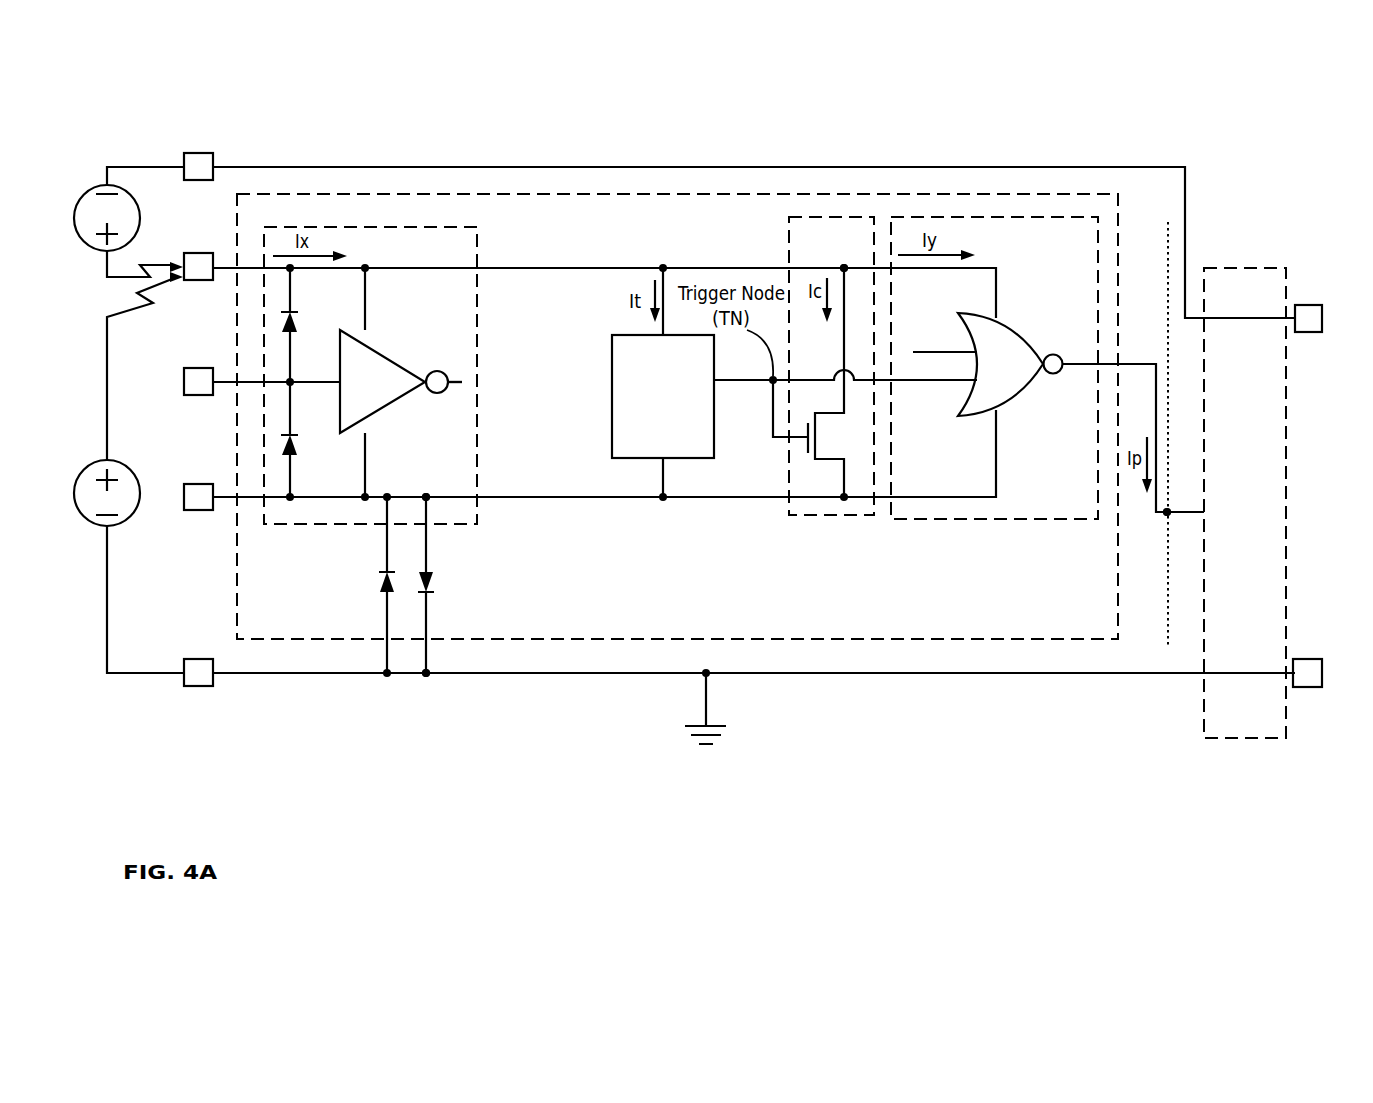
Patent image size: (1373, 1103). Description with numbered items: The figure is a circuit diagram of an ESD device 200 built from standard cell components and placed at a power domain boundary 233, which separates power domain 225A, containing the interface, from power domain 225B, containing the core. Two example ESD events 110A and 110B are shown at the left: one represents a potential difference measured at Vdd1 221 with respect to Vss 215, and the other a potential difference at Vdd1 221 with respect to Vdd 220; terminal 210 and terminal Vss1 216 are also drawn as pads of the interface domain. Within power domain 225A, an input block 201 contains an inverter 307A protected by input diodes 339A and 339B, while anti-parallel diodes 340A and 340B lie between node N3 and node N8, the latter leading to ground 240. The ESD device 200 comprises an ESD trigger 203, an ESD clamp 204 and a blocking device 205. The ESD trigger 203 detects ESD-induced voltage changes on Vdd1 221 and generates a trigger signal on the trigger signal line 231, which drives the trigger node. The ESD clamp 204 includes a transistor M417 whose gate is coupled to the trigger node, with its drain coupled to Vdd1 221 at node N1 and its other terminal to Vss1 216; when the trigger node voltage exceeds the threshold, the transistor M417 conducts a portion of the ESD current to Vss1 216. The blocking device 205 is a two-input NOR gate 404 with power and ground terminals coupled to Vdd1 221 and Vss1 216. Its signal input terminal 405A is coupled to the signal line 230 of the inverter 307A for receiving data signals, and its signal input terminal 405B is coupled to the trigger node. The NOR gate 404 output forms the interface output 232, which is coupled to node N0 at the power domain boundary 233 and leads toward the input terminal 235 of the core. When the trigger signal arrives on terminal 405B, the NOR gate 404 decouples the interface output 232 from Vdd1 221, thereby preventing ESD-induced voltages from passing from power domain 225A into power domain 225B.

The ESD event 110A is at (128, 440).
The ESD event 110B is at (122, 192).
The ESD device 200 is at (883, 568).
The input block 201 is at (310, 227).
The ESD trigger 203 is at (663, 396).
The ESD clamp 204 is at (808, 217).
The blocking device 205 is at (928, 217).
The input pad 210 is at (192, 383).
The Vss 215 is at (192, 680).
The Vss1 216 is at (192, 503).
The Vdd 220 is at (197, 152).
The Vdd1 221 is at (193, 277).
The power domain 225A is at (453, 193).
The power domain 225B is at (1217, 268).
The signal line 230 is at (452, 390).
The trigger signal line 231 is at (745, 383).
The interface output 232 is at (1085, 362).
The power domain boundary 233 is at (1165, 214).
The input terminal 235 is at (1203, 512).
The ground 240 is at (728, 710).
The inverter 307A is at (401, 381).
The input diode 339A is at (298, 323).
The input diode 339B is at (297, 442).
The anti-parallel diode 340A is at (432, 588).
The anti-parallel diode 340B is at (380, 588).
The NOR gate 404 is at (1010, 364).
The signal input terminal 405A is at (920, 352).
The signal input terminal 405B is at (928, 385).
The transistor M417 is at (817, 382).
The node N0 is at (1167, 514).
The node N1 is at (842, 265).
The node N3 is at (428, 493).
The node N8 is at (428, 674).